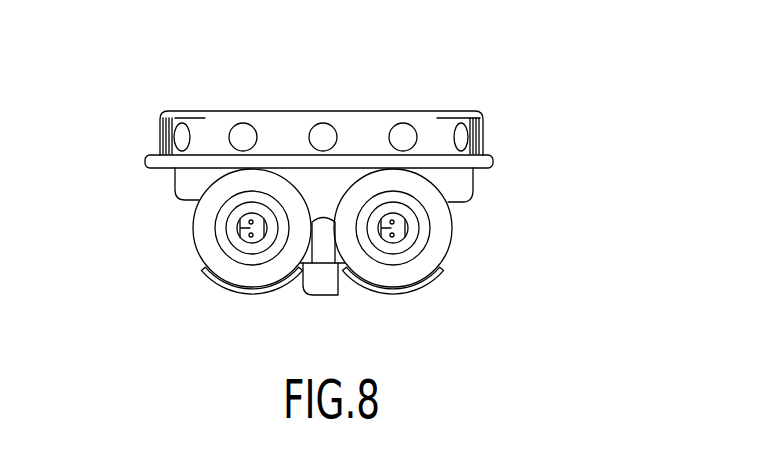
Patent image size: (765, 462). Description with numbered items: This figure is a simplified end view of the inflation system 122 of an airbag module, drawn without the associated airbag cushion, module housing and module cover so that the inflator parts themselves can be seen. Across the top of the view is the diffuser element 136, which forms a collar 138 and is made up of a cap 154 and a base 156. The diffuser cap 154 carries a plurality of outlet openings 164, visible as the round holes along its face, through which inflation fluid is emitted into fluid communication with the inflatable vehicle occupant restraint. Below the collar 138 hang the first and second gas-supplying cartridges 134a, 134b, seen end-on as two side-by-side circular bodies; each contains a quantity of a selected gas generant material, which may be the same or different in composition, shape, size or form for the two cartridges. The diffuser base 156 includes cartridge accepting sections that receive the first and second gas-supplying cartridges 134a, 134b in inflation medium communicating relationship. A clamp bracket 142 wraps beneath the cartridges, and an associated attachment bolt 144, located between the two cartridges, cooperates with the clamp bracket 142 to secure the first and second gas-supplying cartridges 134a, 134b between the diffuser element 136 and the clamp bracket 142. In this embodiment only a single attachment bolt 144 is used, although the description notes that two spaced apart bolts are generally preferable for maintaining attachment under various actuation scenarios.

The inflation system 122 is at (560, 158).
The diffuser element 136 is at (305, 103).
The cap 154 is at (160, 123).
The outlet openings 164 is at (408, 122).
The collar 138 is at (483, 168).
The base 156 is at (172, 202).
The first gas-supplying cartridge 134a is at (210, 245).
The second gas-supplying cartridge 134b is at (437, 247).
The clamp bracket 142 is at (222, 287).
The attachment bolt 144 is at (322, 243).